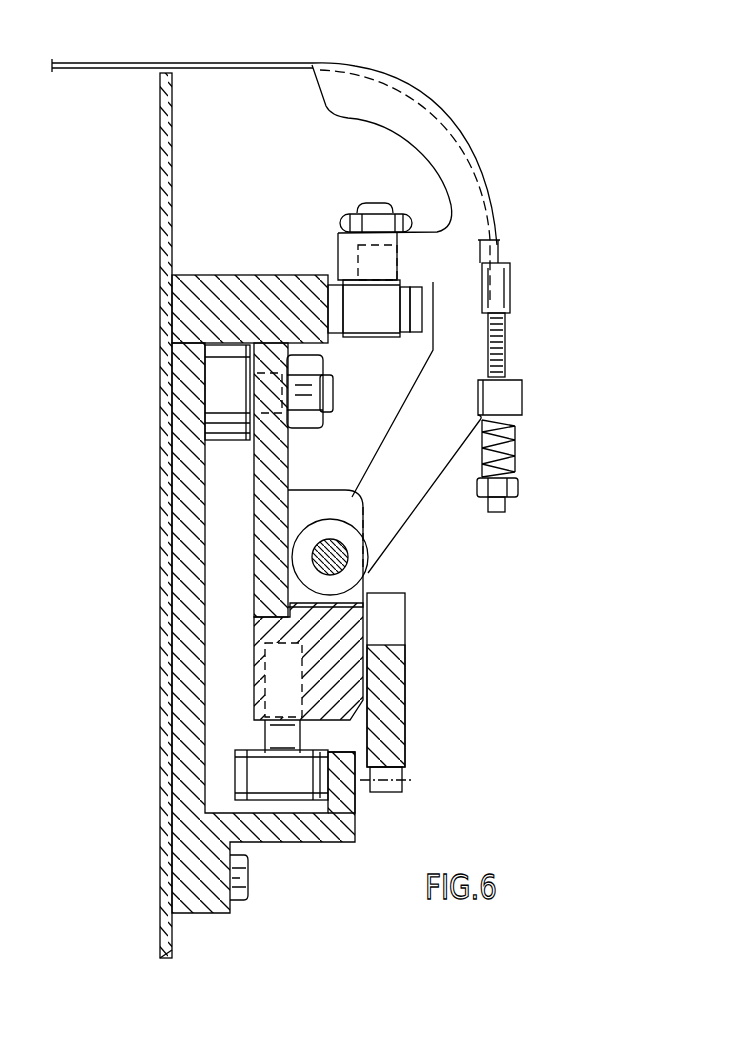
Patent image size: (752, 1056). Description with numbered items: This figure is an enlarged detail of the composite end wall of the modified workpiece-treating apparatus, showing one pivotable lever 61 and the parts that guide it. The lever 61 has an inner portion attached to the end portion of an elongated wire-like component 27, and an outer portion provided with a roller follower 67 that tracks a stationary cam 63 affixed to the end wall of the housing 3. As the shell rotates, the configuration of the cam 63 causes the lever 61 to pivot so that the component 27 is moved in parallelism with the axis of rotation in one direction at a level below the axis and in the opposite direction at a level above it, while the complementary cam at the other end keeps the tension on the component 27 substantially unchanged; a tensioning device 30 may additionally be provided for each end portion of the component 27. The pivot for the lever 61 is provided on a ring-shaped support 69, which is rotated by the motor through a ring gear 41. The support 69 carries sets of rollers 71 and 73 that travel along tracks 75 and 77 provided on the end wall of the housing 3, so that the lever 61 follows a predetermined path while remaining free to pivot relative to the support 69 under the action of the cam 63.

The housing 3 is at (166, 605).
The wire-like component 27 is at (100, 63).
The tensioning device 30 is at (548, 443).
The ring gear 41 is at (400, 688).
The pivotable lever 61 is at (455, 145).
The stationary cam 63 is at (303, 310).
The roller follower 67 is at (410, 308).
The ring-shaped support 69 is at (272, 530).
The roller 71 is at (220, 405).
The roller 73 is at (252, 780).
The track 75 is at (235, 335).
The track 77 is at (357, 770).